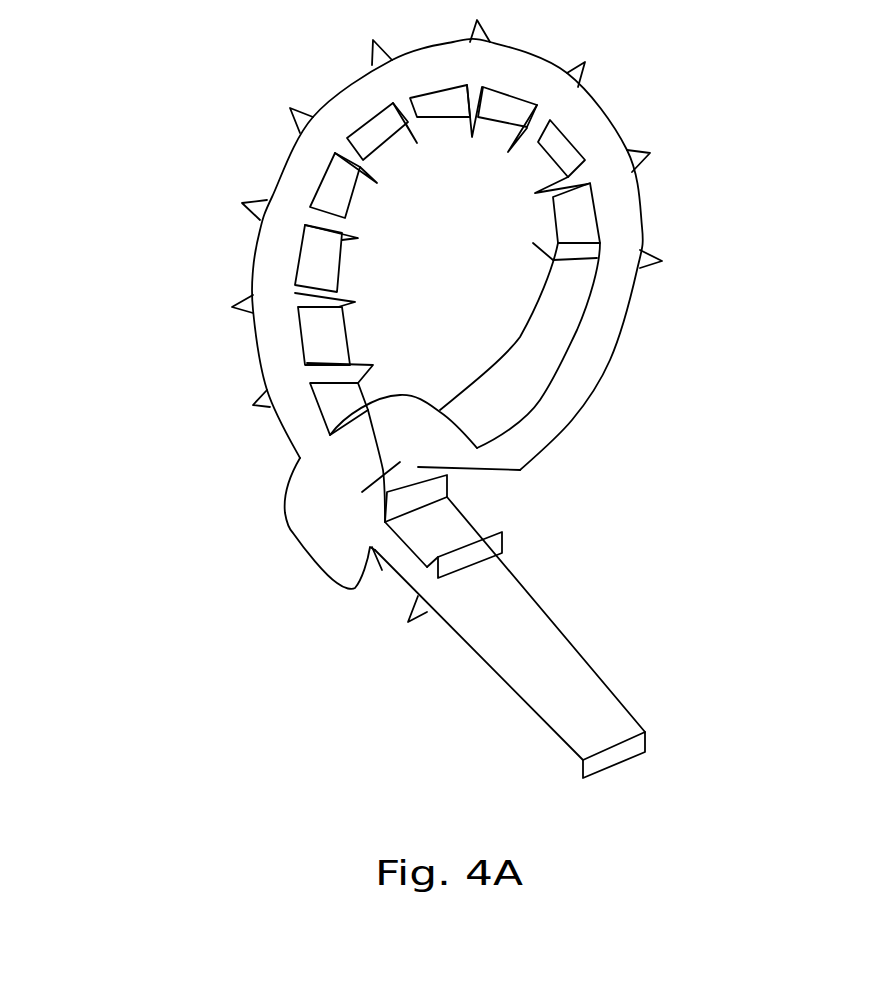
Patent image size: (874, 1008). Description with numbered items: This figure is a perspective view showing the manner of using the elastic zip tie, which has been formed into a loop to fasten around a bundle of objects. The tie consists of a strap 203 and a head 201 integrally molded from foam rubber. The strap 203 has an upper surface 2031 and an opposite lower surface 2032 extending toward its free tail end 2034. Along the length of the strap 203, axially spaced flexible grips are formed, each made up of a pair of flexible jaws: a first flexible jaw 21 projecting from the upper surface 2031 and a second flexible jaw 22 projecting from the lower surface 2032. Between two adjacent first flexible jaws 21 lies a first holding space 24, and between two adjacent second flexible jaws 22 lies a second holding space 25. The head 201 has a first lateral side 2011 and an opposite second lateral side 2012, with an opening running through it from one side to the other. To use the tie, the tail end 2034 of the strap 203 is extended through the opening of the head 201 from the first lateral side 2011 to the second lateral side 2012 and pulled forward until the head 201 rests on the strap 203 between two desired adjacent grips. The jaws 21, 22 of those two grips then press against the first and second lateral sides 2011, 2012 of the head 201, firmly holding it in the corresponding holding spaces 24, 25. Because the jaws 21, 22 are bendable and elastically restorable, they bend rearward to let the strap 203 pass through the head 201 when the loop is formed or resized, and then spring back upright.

The head 201 is at (322, 527).
The first lateral side 2011 is at (287, 493).
The second lateral side 2012 is at (520, 470).
The strap 203 is at (508, 697).
The upper surface 2031 is at (550, 327).
The lower surface 2032 is at (643, 210).
The tail end 2034 is at (625, 750).
The first flexible jaw 21 is at (548, 180).
The second flexible jaw 22 is at (647, 150).
The first holding space 24 is at (318, 328).
The second holding space 25 is at (210, 350).